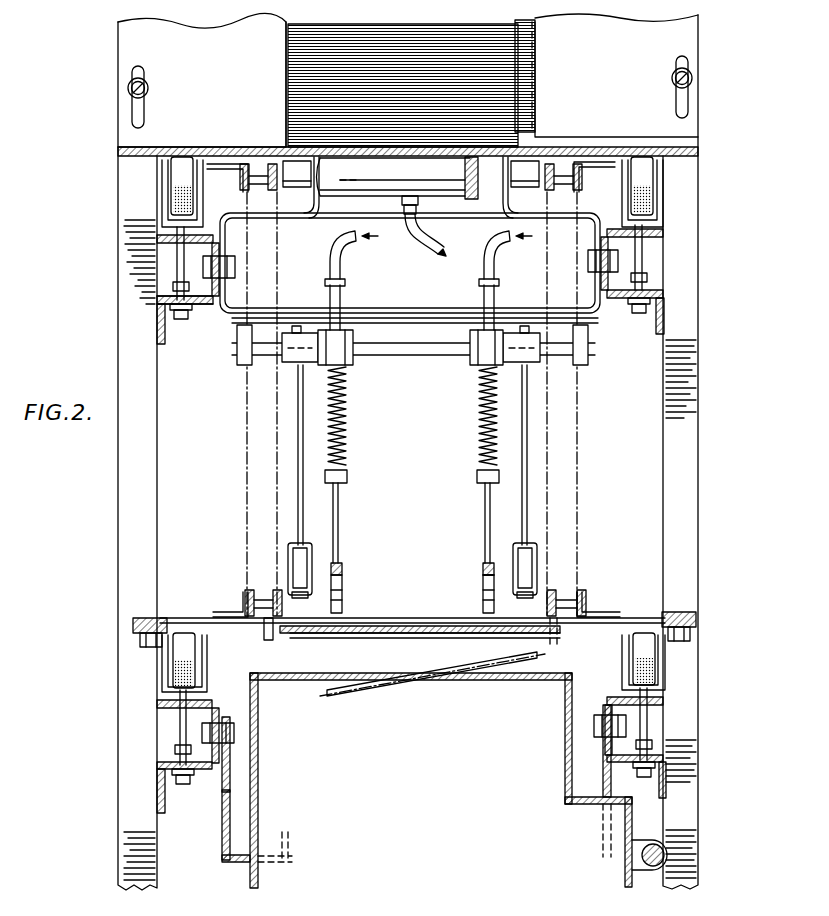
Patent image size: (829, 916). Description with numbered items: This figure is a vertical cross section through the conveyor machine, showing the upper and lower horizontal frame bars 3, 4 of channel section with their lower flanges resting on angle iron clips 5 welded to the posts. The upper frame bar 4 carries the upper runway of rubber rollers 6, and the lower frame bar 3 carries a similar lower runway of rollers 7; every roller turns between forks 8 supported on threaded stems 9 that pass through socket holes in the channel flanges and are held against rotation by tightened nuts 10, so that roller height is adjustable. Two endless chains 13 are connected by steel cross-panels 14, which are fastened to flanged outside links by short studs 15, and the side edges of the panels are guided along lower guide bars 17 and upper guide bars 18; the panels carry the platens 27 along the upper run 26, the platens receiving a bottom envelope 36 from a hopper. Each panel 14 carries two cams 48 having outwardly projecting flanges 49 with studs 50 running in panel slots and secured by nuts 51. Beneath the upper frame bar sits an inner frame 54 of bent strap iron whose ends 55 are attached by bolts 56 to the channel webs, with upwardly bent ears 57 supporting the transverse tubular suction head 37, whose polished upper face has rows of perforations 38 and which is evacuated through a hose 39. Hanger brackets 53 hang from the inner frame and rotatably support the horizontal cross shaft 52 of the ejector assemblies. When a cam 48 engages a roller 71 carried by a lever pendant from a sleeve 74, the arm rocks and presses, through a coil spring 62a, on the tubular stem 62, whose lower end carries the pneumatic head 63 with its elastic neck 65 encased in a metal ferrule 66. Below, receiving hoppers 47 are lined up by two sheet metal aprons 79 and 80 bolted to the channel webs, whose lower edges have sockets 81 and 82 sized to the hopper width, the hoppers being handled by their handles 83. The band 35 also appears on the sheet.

The cross-panel 14 is at (313, 43).
The vertical band 35 is at (527, 48).
The endless chain 13 is at (408, 135).
The platen 27 is at (492, 148).
The rubber roller 6 is at (178, 166).
The upper guide bar 18 is at (136, 156).
The fork 8 is at (165, 193).
The stud 15 is at (230, 168).
The cam 48 is at (272, 188).
The ear 57 is at (320, 192).
The tubular suction head 37 is at (391, 177).
The perforations 38 is at (470, 190).
The hose 39 is at (405, 213).
The stem 9 is at (180, 267).
The bolt 56 is at (235, 266).
The end of inner frame 55 is at (230, 296).
The inner frame 54 is at (402, 318).
The nut 10 is at (172, 310).
The horizontal frame bar 4 is at (212, 305).
The angle iron clip 5 is at (163, 335).
The hanger bracket 53 is at (240, 368).
The sleeve 74 is at (287, 368).
The cross shaft 52 is at (411, 352).
The coil spring 62a is at (346, 441).
The tubular stem 62 is at (343, 496).
The roller 71 is at (305, 556).
The upper run 26 is at (395, 601).
The neck 65 is at (345, 567).
The pneumatic head 63 is at (346, 593).
The metal ferrule 66 is at (486, 567).
The roller 7 is at (180, 673).
The lower guide bar 17 is at (133, 631).
The flange 49 is at (252, 620).
The envelope 36 is at (380, 636).
The nut 51 is at (548, 630).
The stud 50 is at (555, 626).
The horizontal frame bar 3 is at (337, 252).
The hopper 47 is at (441, 780).
The sheet metal apron 80 is at (607, 757).
The socket 81 is at (288, 848).
The sheet metal apron 79 is at (222, 842).
The socket 82 is at (603, 833).
The handle 83 is at (648, 870).